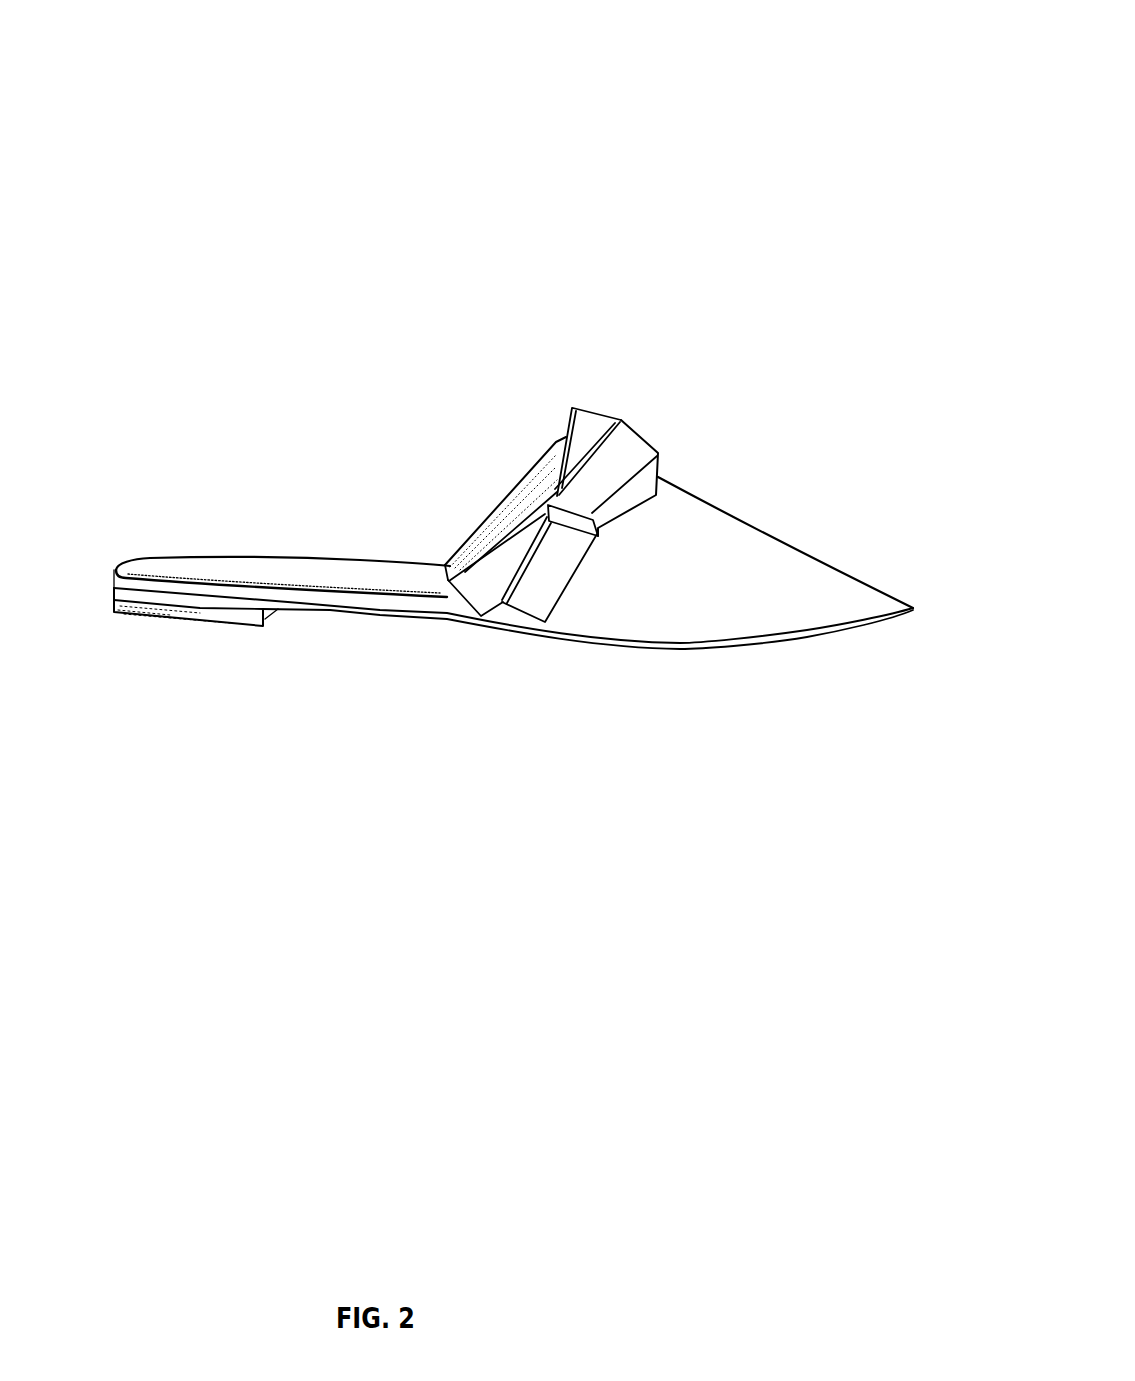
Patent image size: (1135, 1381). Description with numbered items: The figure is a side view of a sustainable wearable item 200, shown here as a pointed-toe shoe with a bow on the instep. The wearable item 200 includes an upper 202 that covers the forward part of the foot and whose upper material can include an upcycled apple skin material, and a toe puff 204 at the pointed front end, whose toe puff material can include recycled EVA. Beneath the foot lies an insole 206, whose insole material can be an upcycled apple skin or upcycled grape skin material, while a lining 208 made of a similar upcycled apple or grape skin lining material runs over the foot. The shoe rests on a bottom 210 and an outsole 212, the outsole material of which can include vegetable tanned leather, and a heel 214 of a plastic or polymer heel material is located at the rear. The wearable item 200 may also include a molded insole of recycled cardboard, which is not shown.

The sustainable wearable item 200 is at (874, 76).
The upper 202 is at (636, 396).
The toe puff 204 is at (828, 535).
The insole 206 is at (230, 568).
The lining 208 is at (545, 500).
The bottom 210 is at (348, 630).
The outsole 212 is at (438, 620).
The heel 214 is at (97, 610).